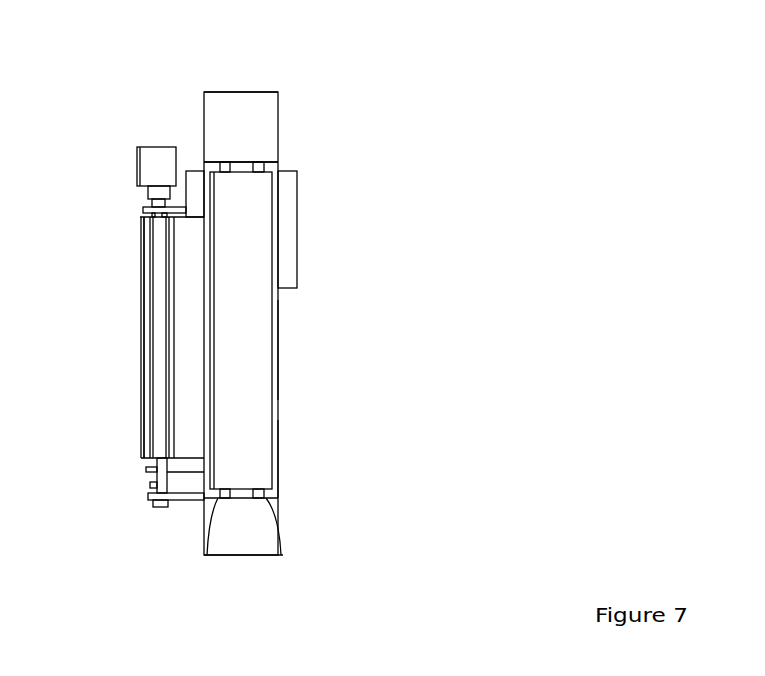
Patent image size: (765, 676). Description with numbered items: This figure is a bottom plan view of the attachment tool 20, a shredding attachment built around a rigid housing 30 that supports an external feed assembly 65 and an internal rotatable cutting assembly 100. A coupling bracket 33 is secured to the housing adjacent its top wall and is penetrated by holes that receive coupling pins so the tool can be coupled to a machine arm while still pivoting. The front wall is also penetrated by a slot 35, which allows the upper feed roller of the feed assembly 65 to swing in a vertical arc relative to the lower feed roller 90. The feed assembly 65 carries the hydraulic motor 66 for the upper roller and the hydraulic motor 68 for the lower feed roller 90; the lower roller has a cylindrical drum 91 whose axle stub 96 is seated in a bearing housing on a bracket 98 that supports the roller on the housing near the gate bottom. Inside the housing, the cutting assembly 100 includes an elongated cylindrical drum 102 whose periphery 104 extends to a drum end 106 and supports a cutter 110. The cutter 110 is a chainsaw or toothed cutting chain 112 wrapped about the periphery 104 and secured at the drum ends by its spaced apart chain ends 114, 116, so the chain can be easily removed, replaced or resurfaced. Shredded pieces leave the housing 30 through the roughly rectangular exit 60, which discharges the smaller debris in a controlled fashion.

The attachment tool 20 is at (135, 39).
The rigid housing 30 is at (314, 522).
The coupling bracket 33 is at (196, 183).
The slot 35 is at (292, 222).
The exit 60 is at (364, 282).
The feed assembly 65 is at (115, 302).
The hydraulic motor 66 is at (137, 170).
The hydraulic motor 68 is at (158, 155).
The lower feed roller 90 is at (156, 358).
The cylindrical drum 91 is at (155, 420).
The axle stub 96 is at (148, 494).
The bracket 98 is at (160, 507).
The cutting assembly 100 is at (295, 361).
The elongated cylindrical drum 102 is at (273, 380).
The drum periphery 104 is at (276, 555).
The drum end 106 is at (264, 171).
The cutter 110 is at (279, 455).
The cutting chain 112 is at (268, 333).
The chain end 114 is at (207, 555).
The chain end 116 is at (221, 163).